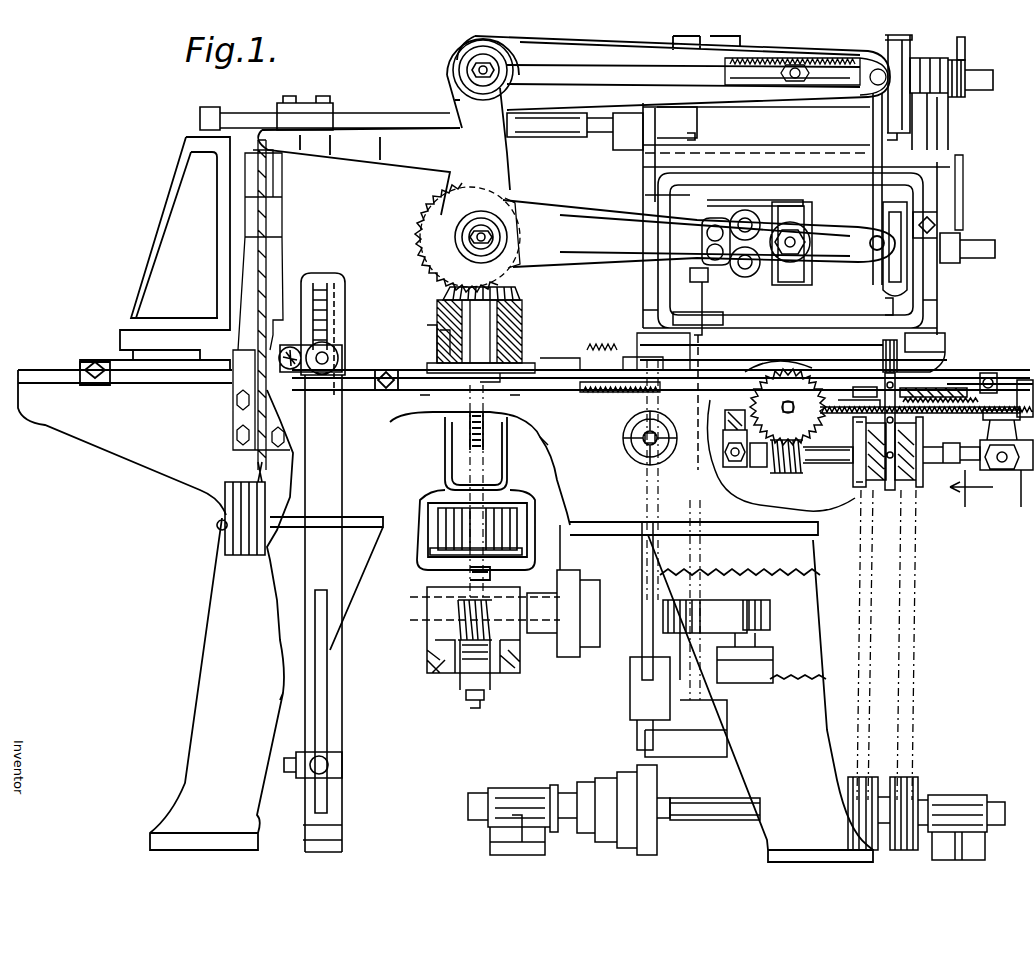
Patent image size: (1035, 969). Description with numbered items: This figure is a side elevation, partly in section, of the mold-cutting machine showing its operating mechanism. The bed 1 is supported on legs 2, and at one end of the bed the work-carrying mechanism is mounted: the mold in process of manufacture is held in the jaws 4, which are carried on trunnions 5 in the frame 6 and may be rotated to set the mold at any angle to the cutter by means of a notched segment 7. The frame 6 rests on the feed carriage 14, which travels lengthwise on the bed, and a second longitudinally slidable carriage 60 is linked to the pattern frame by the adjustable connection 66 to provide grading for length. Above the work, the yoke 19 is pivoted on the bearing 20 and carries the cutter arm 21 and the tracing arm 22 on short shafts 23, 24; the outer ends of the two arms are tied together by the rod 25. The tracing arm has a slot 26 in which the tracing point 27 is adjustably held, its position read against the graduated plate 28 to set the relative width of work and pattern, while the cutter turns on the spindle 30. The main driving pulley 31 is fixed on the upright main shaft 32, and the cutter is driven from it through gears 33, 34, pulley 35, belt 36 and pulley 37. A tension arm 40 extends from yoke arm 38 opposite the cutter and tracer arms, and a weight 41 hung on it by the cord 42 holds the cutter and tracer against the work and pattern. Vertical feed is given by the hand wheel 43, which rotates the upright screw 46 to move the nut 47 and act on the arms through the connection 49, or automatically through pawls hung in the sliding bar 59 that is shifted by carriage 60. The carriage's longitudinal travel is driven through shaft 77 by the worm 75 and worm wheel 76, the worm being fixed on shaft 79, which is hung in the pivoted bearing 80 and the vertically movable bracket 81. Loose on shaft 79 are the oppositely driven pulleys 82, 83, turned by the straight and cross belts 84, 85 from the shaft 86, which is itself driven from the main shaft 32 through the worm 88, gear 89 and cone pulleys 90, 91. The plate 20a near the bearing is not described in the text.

The bed 1 is at (185, 460).
The legs 2 is at (215, 660).
The jaws 4 is at (690, 275).
The trunnions 5 is at (965, 255).
The frame 6 is at (930, 320).
The notched segment 7 is at (960, 190).
The feed carriage 14 is at (930, 358).
The yoke 19 is at (505, 322).
The bearing 20 is at (520, 365).
The plate 20a is at (438, 348).
The cutter arm 21 is at (568, 270).
The tracing arm 22 is at (612, 62).
The short shaft 23 is at (468, 238).
The short shaft 24 is at (452, 70).
The rod 25 is at (878, 165).
The slot 26 is at (826, 82).
The tracing point 27 is at (787, 83).
The graduated plate 28 is at (880, 55).
The spindle 30 is at (800, 270).
The main driving pulley 31 is at (445, 532).
The main shaft 32 is at (475, 430).
The gear 33 is at (443, 294).
The gear 34 is at (418, 218).
The pulley 35 is at (520, 240).
The belt 36 is at (645, 228).
The pulley 37 is at (825, 243).
The yoke arm 38 is at (508, 160).
The tension arm 40 is at (340, 163).
The weight 41 is at (240, 530).
The cord 42 is at (268, 262).
The hand wheel 43 is at (636, 460).
The upright screw 46 is at (645, 552).
The nut 47 is at (632, 690).
The connection 49 is at (705, 590).
The sliding bar 59 is at (572, 392).
The carriage 60 is at (125, 310).
The adjustable connection 66 is at (358, 112).
The worm 75 is at (793, 470).
The worm wheel 76 is at (818, 430).
The shaft 77 is at (795, 415).
The shaft 79 is at (975, 492).
The pivoted bearing 80 is at (1013, 472).
The vertically movable bracket 81 is at (740, 462).
The pulley 82 is at (915, 495).
The pulley 83 is at (868, 495).
The straight belt 84 is at (915, 615).
The cross belt 85 is at (866, 612).
The shaft 86 is at (695, 812).
The worm 88 is at (490, 655).
The gear 89 is at (492, 572).
The cone pulley 90 is at (568, 645).
The cone pulley 91 is at (582, 800).